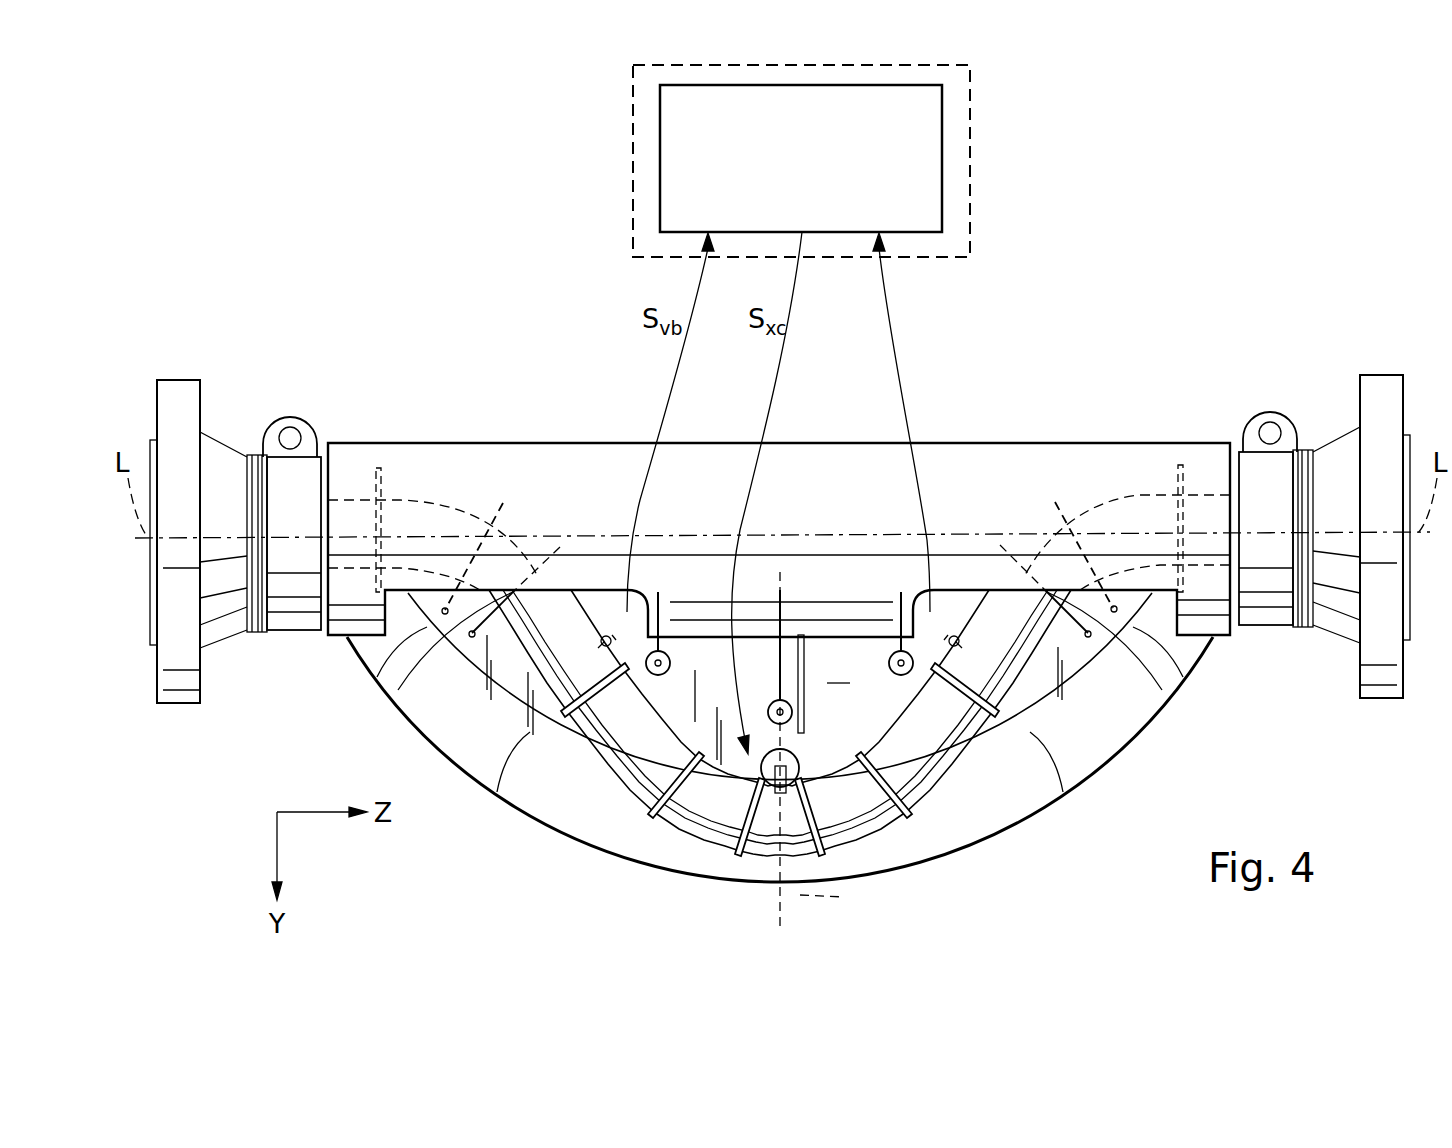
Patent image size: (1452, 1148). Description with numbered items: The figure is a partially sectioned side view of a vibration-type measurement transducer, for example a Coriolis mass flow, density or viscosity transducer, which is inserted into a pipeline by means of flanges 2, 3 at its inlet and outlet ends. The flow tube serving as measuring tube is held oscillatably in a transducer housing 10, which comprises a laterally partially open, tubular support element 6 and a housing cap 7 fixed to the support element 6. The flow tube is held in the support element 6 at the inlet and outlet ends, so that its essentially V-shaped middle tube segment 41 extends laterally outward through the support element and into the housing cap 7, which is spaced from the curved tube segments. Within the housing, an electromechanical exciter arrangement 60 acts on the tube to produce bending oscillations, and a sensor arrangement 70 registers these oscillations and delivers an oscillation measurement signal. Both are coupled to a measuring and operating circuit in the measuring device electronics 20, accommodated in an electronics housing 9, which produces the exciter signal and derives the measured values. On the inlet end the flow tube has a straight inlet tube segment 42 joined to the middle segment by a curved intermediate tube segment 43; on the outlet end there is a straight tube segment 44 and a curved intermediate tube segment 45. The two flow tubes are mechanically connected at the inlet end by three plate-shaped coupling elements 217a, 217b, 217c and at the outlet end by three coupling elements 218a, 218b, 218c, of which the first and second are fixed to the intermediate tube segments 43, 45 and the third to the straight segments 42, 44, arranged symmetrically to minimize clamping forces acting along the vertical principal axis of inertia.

The flange 2 is at (175, 390).
The flange 3 is at (1375, 385).
The support element 6 is at (974, 455).
The housing cap 7 is at (1082, 762).
The electronics housing 9 is at (753, 161).
The transducer housing 10 is at (440, 418).
The measuring device electronics 20 is at (815, 170).
The middle tube segment 41 is at (715, 805).
The inlet tube segment 42 is at (305, 633).
The intermediate tube segment 43 is at (423, 530).
The inlet tube segment 44 is at (1250, 635).
The intermediate tube segment 45 is at (1123, 565).
The exciter arrangement 60 is at (828, 752).
The sensor arrangement 70 is at (603, 618).
The coupling element 217a is at (420, 622).
The coupling element 217b is at (503, 503).
The coupling element 217c is at (377, 470).
The coupling element 218a is at (1140, 640).
The coupling element 218b is at (1055, 503).
The coupling element 218c is at (1182, 468).